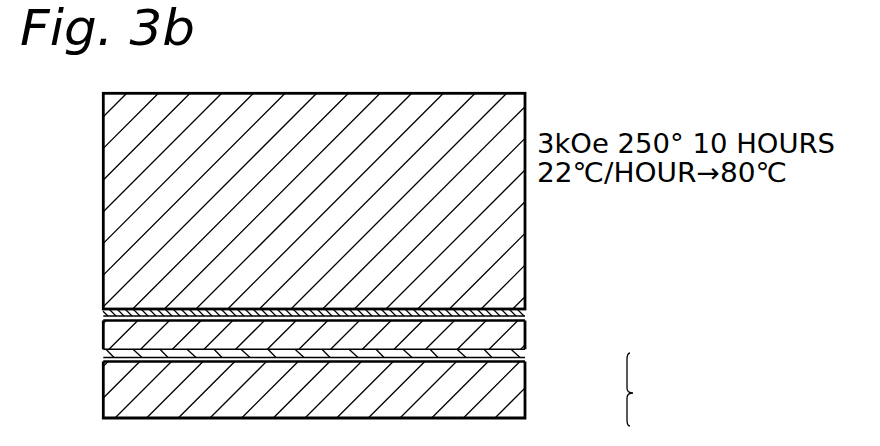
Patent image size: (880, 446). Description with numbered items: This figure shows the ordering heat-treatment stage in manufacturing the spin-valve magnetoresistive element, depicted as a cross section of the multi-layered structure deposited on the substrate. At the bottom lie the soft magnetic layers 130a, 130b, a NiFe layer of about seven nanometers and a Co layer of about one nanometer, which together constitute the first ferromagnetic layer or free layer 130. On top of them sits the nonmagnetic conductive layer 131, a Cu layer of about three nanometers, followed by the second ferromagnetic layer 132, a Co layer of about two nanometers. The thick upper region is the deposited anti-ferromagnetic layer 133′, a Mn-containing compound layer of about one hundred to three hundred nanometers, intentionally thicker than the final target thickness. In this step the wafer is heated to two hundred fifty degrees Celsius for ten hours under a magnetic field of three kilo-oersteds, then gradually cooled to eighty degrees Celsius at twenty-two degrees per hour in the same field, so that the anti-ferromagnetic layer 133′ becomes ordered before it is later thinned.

The deposited anti-ferromagnetic layer 133′ is at (515, 261).
The second ferromagnetic layer 132 is at (517, 311).
The nonmagnetic conductive layer 131 is at (515, 336).
The soft magnetic layer 130b is at (515, 355).
The soft magnetic layer 130a is at (515, 392).
The free layer 130 is at (659, 389).